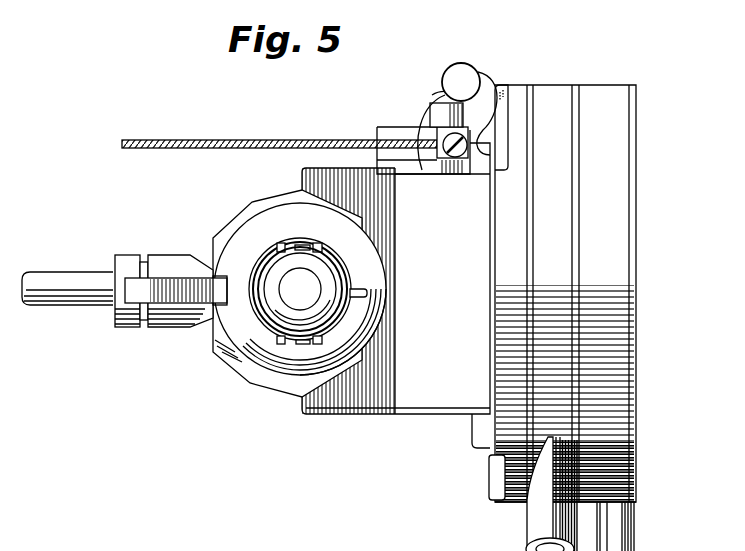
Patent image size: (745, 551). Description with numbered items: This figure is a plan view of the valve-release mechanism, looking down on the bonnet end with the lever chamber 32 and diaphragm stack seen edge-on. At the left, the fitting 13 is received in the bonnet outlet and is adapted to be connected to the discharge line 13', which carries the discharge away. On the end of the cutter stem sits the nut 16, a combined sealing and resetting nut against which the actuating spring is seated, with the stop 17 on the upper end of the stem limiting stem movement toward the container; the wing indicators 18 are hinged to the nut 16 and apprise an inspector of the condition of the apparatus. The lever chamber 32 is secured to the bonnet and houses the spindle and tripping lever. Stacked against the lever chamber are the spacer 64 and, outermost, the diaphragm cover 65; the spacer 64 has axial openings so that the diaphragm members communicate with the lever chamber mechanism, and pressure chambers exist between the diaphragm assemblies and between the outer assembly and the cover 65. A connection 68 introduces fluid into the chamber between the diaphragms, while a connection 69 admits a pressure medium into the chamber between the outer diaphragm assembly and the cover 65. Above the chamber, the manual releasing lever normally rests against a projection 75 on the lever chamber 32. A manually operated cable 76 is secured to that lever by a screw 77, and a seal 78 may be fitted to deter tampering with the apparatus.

The manually operated cable 76 is at (172, 136).
The screw 77 is at (445, 132).
The seal 78 is at (458, 64).
The spacer 64 is at (550, 90).
The diaphragm cover 65 is at (612, 92).
The projection 75 is at (484, 156).
The wing indicators 18 is at (328, 250).
The discharge line 13' is at (67, 309).
The fitting 13 is at (171, 319).
The stop 17 is at (270, 312).
The nut 16 is at (267, 358).
The lever chamber 32 is at (442, 395).
The connection 68 is at (527, 525).
The connection 69 is at (614, 531).